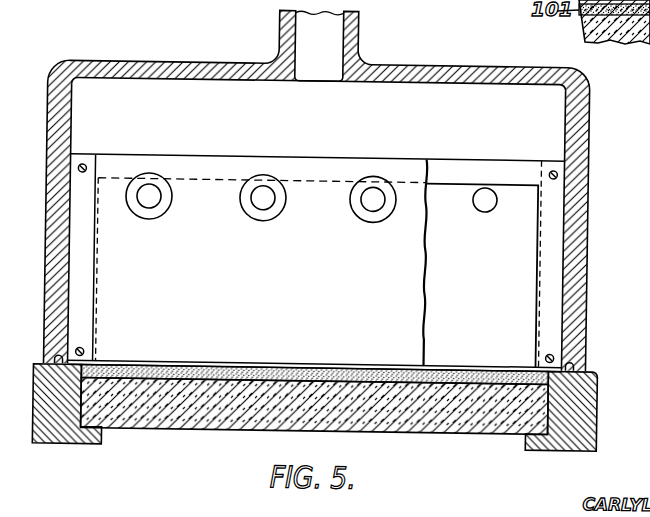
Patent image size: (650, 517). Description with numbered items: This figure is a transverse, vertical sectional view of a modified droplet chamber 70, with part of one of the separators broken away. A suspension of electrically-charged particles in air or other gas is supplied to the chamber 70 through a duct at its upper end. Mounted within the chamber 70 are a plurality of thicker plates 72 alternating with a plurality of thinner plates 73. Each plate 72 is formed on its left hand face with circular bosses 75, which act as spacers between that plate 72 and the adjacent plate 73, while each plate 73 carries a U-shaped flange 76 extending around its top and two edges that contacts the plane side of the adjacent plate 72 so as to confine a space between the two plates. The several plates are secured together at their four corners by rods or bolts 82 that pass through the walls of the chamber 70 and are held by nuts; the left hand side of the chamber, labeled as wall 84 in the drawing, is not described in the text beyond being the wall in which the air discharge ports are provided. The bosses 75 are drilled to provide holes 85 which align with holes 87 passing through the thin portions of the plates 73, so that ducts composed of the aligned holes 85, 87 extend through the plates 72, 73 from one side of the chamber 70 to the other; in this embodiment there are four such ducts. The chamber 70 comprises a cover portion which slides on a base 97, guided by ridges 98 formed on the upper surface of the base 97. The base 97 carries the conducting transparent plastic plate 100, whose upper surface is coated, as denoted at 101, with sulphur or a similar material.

The chamber 70 is at (462, 66).
The plates 72 is at (413, 262).
The plates 73 is at (481, 276).
The circular bosses 75 is at (360, 202).
The U-shaped flange 76 is at (556, 262).
The rods or bolts 82 is at (80, 168).
The left side wall 84 is at (83, 248).
The holes 85 is at (258, 196).
The holes 87 is at (491, 204).
The base 97 is at (587, 410).
The ridges 98 is at (582, 362).
The conducting transparent plastic plate 100 is at (457, 417).
The coating 101 is at (252, 365).